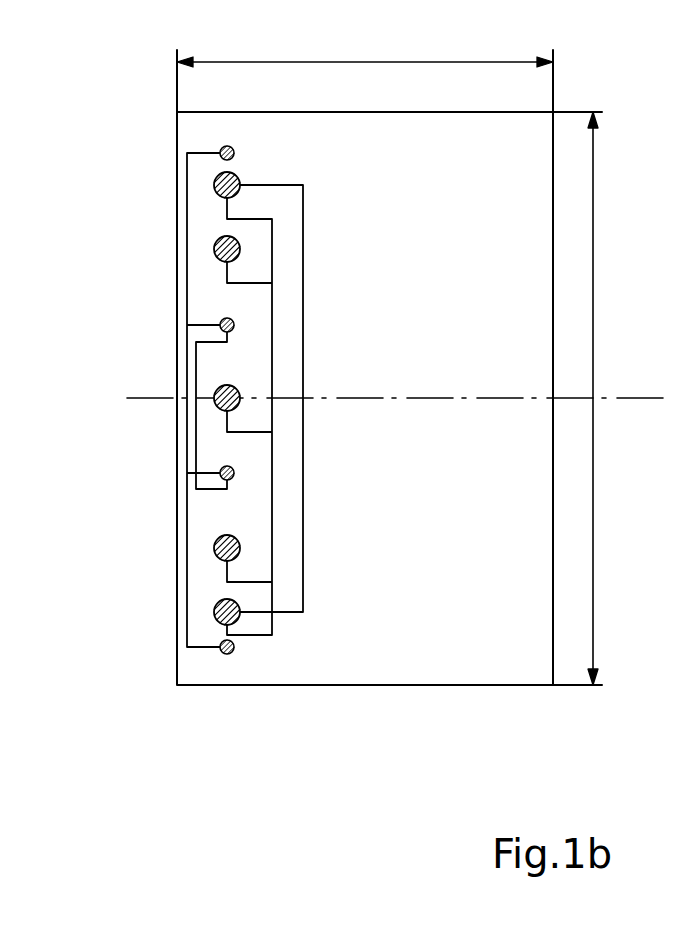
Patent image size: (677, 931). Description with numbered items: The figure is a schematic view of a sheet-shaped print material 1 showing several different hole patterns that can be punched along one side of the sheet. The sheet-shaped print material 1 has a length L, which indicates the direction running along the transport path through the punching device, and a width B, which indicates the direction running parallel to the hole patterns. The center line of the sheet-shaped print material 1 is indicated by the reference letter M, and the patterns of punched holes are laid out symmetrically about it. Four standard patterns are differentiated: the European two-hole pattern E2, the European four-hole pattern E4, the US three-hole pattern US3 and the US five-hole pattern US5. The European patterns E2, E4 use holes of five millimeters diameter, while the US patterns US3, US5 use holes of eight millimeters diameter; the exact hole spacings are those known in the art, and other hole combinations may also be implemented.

The sheet-shaped print material 1 is at (468, 657).
The center line M is at (160, 398).
The length L is at (360, 62).
The width B is at (594, 425).
The European 2-hole pattern E2 is at (195, 448).
The European 4-hole pattern E4 is at (187, 608).
The US 3-hole pattern US3 is at (303, 598).
The US 5-hole pattern US5 is at (257, 638).